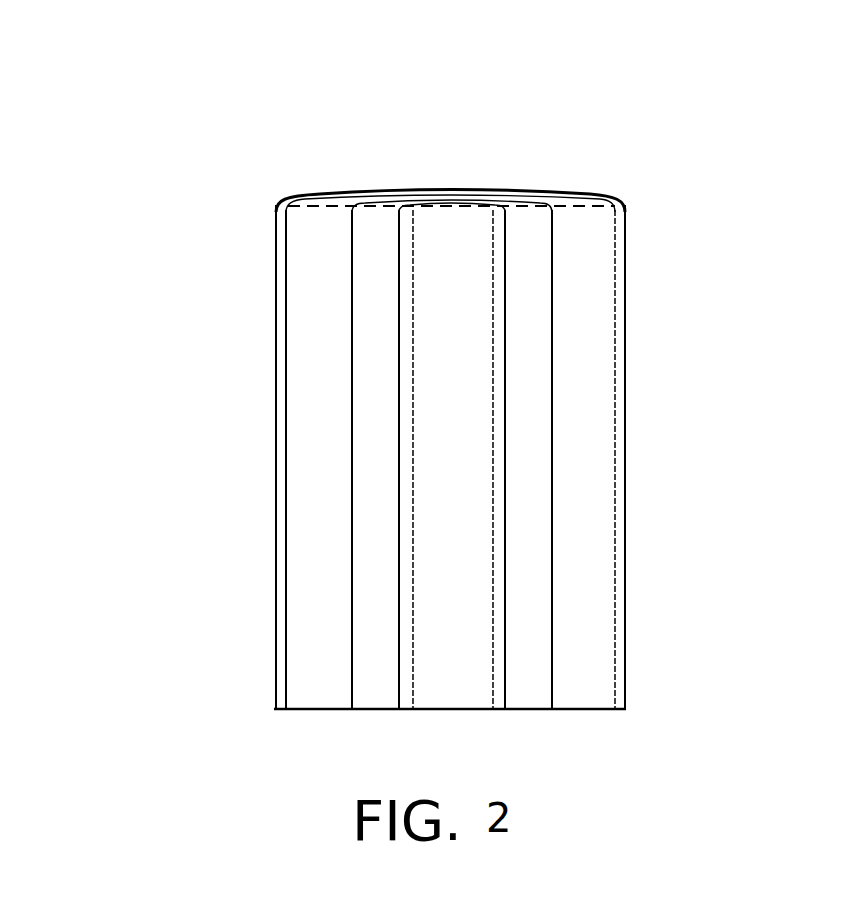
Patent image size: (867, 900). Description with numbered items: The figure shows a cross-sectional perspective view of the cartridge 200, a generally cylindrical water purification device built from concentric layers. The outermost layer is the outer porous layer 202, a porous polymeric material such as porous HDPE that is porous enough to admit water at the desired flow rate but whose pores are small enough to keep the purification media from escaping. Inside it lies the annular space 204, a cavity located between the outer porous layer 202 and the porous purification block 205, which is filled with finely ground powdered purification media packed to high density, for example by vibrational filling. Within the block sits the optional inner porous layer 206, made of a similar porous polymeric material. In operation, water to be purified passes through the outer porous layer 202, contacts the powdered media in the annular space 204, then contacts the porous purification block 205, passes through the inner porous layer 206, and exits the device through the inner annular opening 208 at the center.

The cartridge 200 is at (423, 418).
The outer porous layer 202 is at (623, 405).
The annular space 204 is at (535, 340).
The porous purification block 205 is at (310, 410).
The inner porous layer 206 is at (498, 200).
The inner annular opening 208 is at (450, 530).